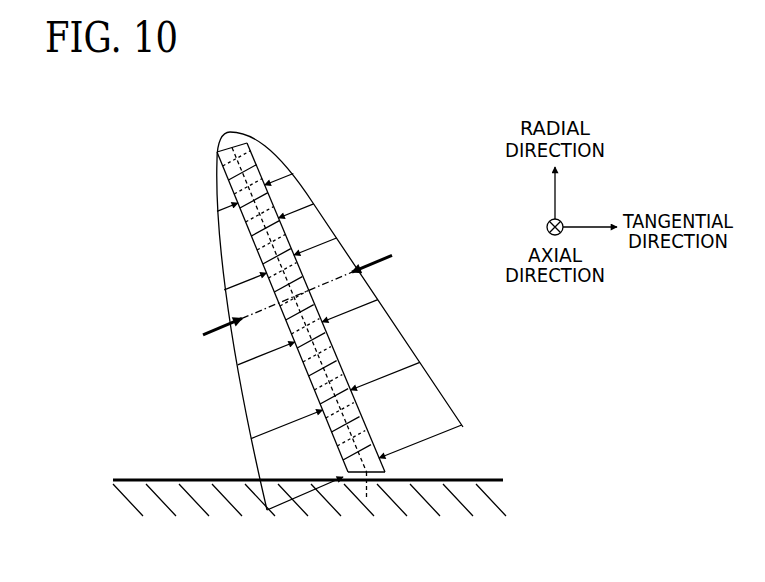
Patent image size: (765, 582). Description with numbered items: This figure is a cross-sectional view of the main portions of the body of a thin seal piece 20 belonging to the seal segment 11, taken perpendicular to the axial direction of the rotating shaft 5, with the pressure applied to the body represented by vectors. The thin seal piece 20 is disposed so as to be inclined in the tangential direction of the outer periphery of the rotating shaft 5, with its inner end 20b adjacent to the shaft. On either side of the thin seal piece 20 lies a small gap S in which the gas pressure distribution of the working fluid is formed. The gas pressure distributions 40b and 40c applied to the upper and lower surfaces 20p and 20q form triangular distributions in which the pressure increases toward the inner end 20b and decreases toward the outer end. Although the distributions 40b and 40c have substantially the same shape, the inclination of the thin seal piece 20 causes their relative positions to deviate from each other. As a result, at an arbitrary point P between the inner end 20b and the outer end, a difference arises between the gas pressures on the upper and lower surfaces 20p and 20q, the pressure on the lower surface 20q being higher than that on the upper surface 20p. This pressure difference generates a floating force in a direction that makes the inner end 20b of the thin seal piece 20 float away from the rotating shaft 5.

The seal segment 11 is at (357, 150).
The thin seal piece 20 is at (340, 351).
The upper surface 20p is at (362, 417).
The lower surface 20q is at (336, 440).
The inner end 20b is at (364, 483).
The gas pressure distribution 40b is at (400, 328).
The gas pressure distribution 40c is at (220, 250).
The rotating shaft 5 is at (478, 481).
The arbitrary point P is at (293, 297).
The small gap S is at (191, 196).